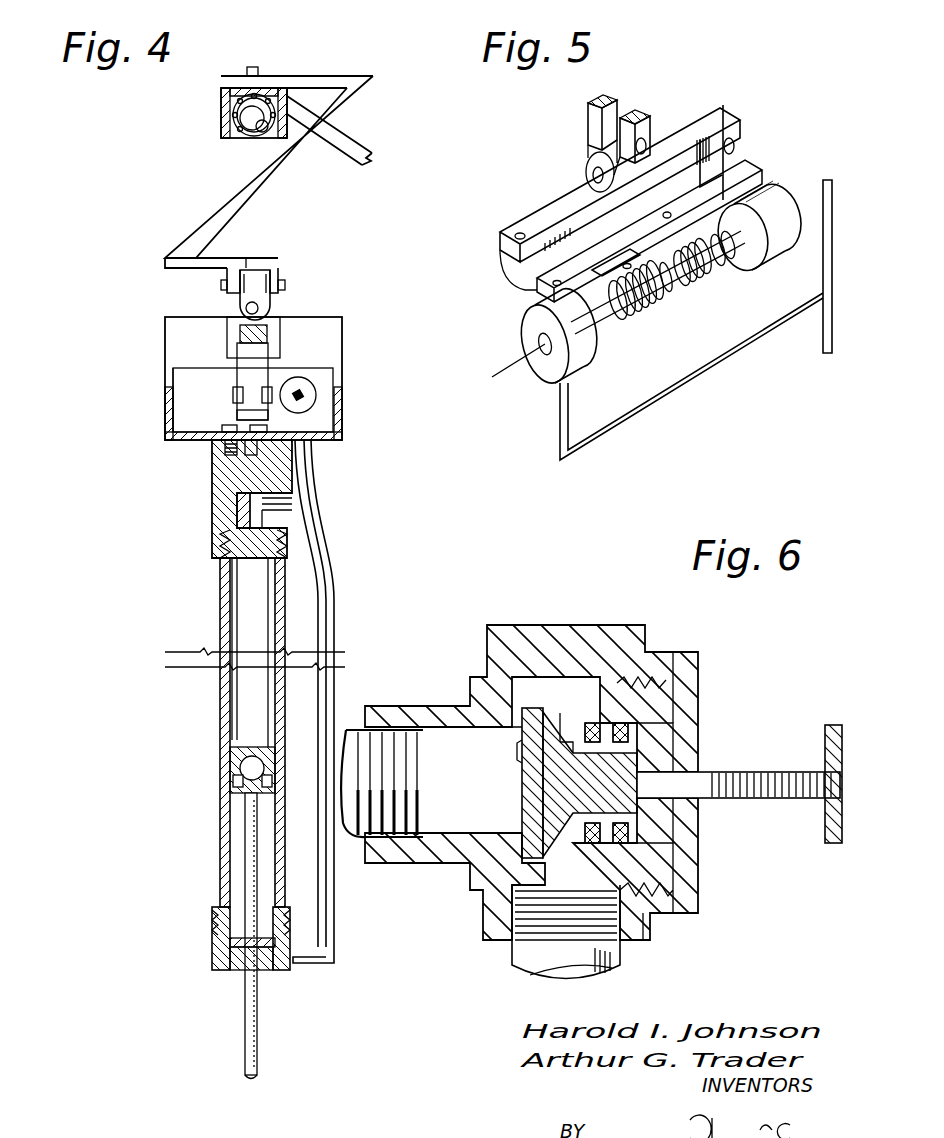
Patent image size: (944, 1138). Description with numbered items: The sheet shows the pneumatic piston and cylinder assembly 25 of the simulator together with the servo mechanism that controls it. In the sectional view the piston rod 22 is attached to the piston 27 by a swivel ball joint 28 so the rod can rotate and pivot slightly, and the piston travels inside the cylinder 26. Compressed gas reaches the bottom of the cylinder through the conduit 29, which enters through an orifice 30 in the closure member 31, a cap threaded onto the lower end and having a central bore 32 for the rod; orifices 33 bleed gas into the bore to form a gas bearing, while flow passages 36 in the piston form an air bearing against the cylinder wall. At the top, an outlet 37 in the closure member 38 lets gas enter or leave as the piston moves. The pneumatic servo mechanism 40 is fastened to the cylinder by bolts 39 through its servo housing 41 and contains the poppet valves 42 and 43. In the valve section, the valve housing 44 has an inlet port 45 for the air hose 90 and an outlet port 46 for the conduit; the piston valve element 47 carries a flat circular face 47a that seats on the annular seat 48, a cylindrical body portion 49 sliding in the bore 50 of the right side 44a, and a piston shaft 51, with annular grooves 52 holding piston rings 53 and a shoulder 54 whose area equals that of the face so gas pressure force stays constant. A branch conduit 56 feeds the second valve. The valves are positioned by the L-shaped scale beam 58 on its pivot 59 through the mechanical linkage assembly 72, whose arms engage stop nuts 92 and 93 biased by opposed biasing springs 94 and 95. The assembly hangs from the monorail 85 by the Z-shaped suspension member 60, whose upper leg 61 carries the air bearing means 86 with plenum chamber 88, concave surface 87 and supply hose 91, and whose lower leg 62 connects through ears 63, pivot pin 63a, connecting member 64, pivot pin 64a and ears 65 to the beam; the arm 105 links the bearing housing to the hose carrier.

In FIG. 4, the piston rod 22 is at (248, 1047).
In FIG. 4, the tube 25 is at (214, 598).
In FIG. 4, the cylinder 26 is at (229, 686).
In FIG. 4, the piston 27 is at (250, 740).
In FIG. 4, the swivel ball joint 28 is at (243, 760).
In FIG. 4, the conduit 29 is at (336, 912).
In FIG. 5, the conduit 29 is at (822, 340).
In FIG. 6, the conduit 29 is at (600, 964).
In FIG. 4, the orifice 30 is at (283, 930).
In FIG. 4, the closure member 31 is at (213, 926).
In FIG. 4, the central bore 32 is at (232, 972).
In FIG. 4, the orifices 33 is at (213, 948).
In FIG. 4, the flow passages 36 is at (238, 780).
In FIG. 4, the outlet 37 is at (280, 508).
In FIG. 4, the closure member 38 is at (215, 482).
In FIG. 4, the bolts 39 is at (226, 450).
In FIG. 4, the pneumatic servo mechanism 40 is at (346, 402).
In FIG. 4, the servo housing 41 is at (167, 400).
In FIG. 5, the poppet valve 42 is at (516, 334).
In FIG. 6, the poppet valve 42 is at (488, 620).
In FIG. 5, the poppet valve 43 is at (779, 186).
In FIG. 6, the valve housing 44 is at (550, 628).
In FIG. 6, the right side of housing 44a is at (700, 688).
In FIG. 6, the inlet port 45 is at (470, 833).
In FIG. 6, the outlet port 46 is at (510, 882).
In FIG. 6, the piston valve element 47 is at (525, 808).
In FIG. 6, the flat circular face 47a is at (520, 742).
In FIG. 6, the annular seat 48 is at (520, 846).
In FIG. 6, the cylindrical body portion 49 is at (555, 775).
In FIG. 6, the bore 50 is at (660, 835).
In FIG. 6, the piston shaft 51 is at (783, 770).
In FIG. 6, the annular grooves 52 is at (605, 745).
In FIG. 6, the piston rings 53 is at (603, 835).
In FIG. 6, the shoulder 54 is at (563, 738).
In FIG. 5, the branch conduit 56 is at (712, 375).
In FIG. 4, the scale beam 58 is at (240, 335).
In FIG. 5, the scale beam 58 is at (567, 198).
In FIG. 5, the pivot 59 is at (745, 138).
In FIG. 4, the Z-shaped suspension member 60 is at (232, 203).
In FIG. 4, the upper leg 61 is at (352, 80).
In FIG. 4, the lower leg 62 is at (258, 266).
In FIG. 4, the ears 63 is at (282, 272).
In FIG. 5, the ears 63 is at (612, 90).
In FIG. 4, the pivot pin 63a is at (284, 288).
In FIG. 5, the pivot pin 63a is at (648, 125).
In FIG. 4, the connecting member 64 is at (275, 300).
In FIG. 5, the connecting member 64 is at (605, 120).
In FIG. 4, the pivot pin 64a is at (246, 305).
In FIG. 5, the pivot pin 64a is at (594, 172).
In FIG. 5, the ears 65 is at (597, 155).
In FIG. 5, the mechanical linkage assembly 72 is at (526, 298).
In FIG. 4, the monorail 85 is at (245, 132).
In FIG. 4, the air bearing means 86 is at (216, 118).
In FIG. 4, the concave cylindrical surface 87 is at (262, 132).
In FIG. 4, the plenum chamber 88 is at (226, 103).
In FIG. 6, the air hose 90 is at (348, 730).
In FIG. 4, the hose 91 is at (258, 76).
In FIG. 5, the stop nut 92 is at (620, 318).
In FIG. 5, the stop nut 93 is at (735, 262).
In FIG. 5, the biasing spring 94 is at (642, 308).
In FIG. 5, the biasing spring 95 is at (700, 280).
In FIG. 4, the arm 105 is at (358, 137).